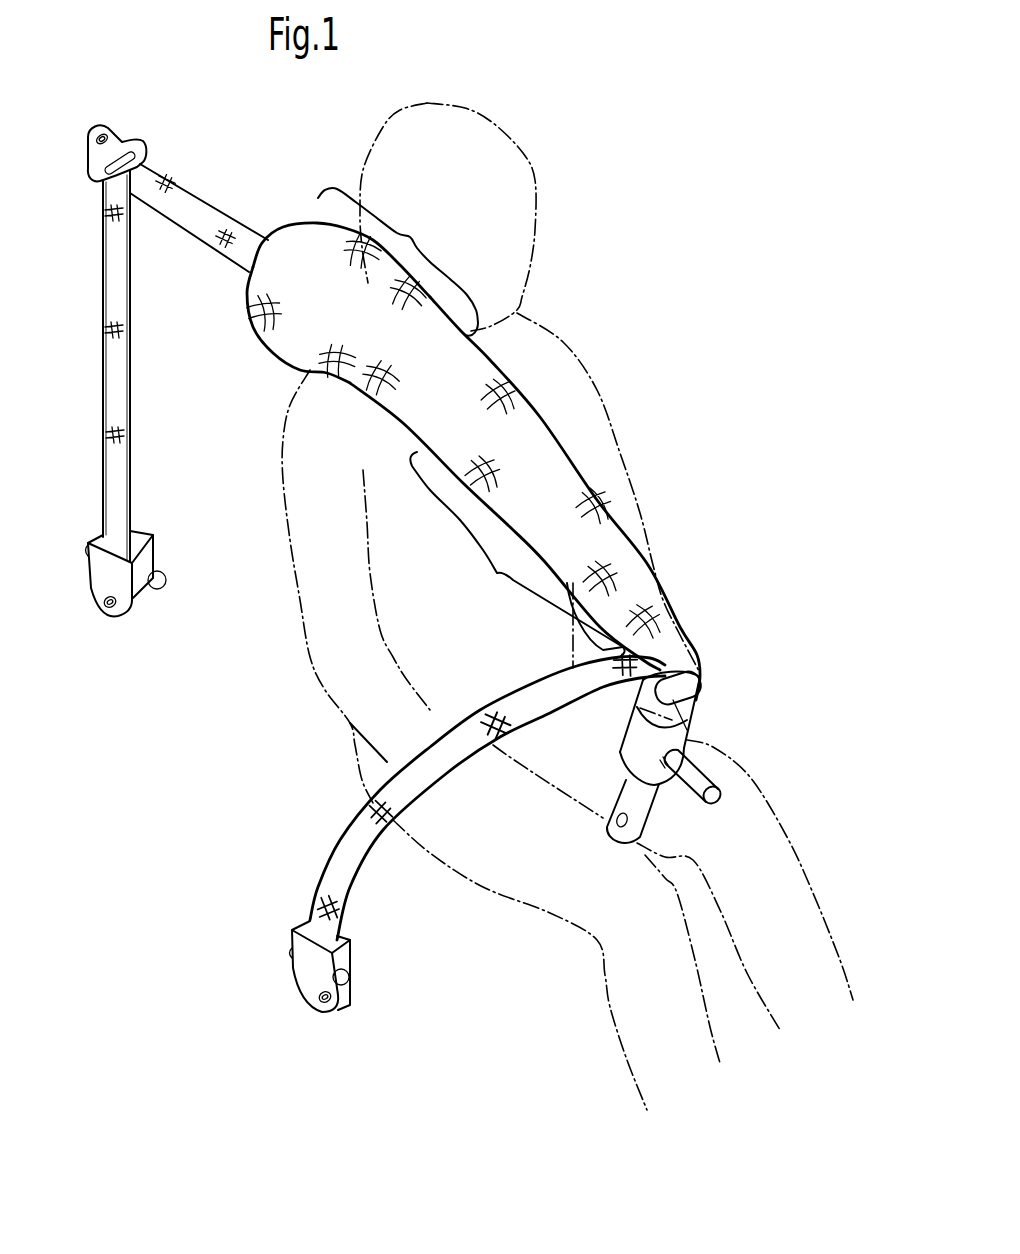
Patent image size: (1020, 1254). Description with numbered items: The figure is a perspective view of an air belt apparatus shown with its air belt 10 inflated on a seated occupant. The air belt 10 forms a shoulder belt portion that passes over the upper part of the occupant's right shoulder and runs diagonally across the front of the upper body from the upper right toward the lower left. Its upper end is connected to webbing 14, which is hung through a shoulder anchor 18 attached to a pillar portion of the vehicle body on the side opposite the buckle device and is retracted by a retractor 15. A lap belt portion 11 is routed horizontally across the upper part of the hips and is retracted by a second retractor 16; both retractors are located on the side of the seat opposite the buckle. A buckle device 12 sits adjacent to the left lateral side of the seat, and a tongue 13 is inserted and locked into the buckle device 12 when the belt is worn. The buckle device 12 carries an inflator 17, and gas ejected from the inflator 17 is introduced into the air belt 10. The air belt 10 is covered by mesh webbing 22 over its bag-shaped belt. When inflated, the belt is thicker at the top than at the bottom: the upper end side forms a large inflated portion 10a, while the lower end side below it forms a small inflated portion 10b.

The air belt 10 is at (540, 416).
The large inflated portion 10a is at (412, 237).
The small inflated portion 10b is at (497, 573).
The lap belt portion 11 is at (345, 845).
The buckle device 12 is at (633, 745).
The tongue 13 is at (701, 693).
The webbing 14 is at (117, 283).
The retractor 15 is at (138, 604).
The retractor 16 is at (313, 967).
The inflator 17 is at (708, 772).
The shoulder anchor 18 is at (127, 140).
The mesh webbing 22 is at (309, 243).